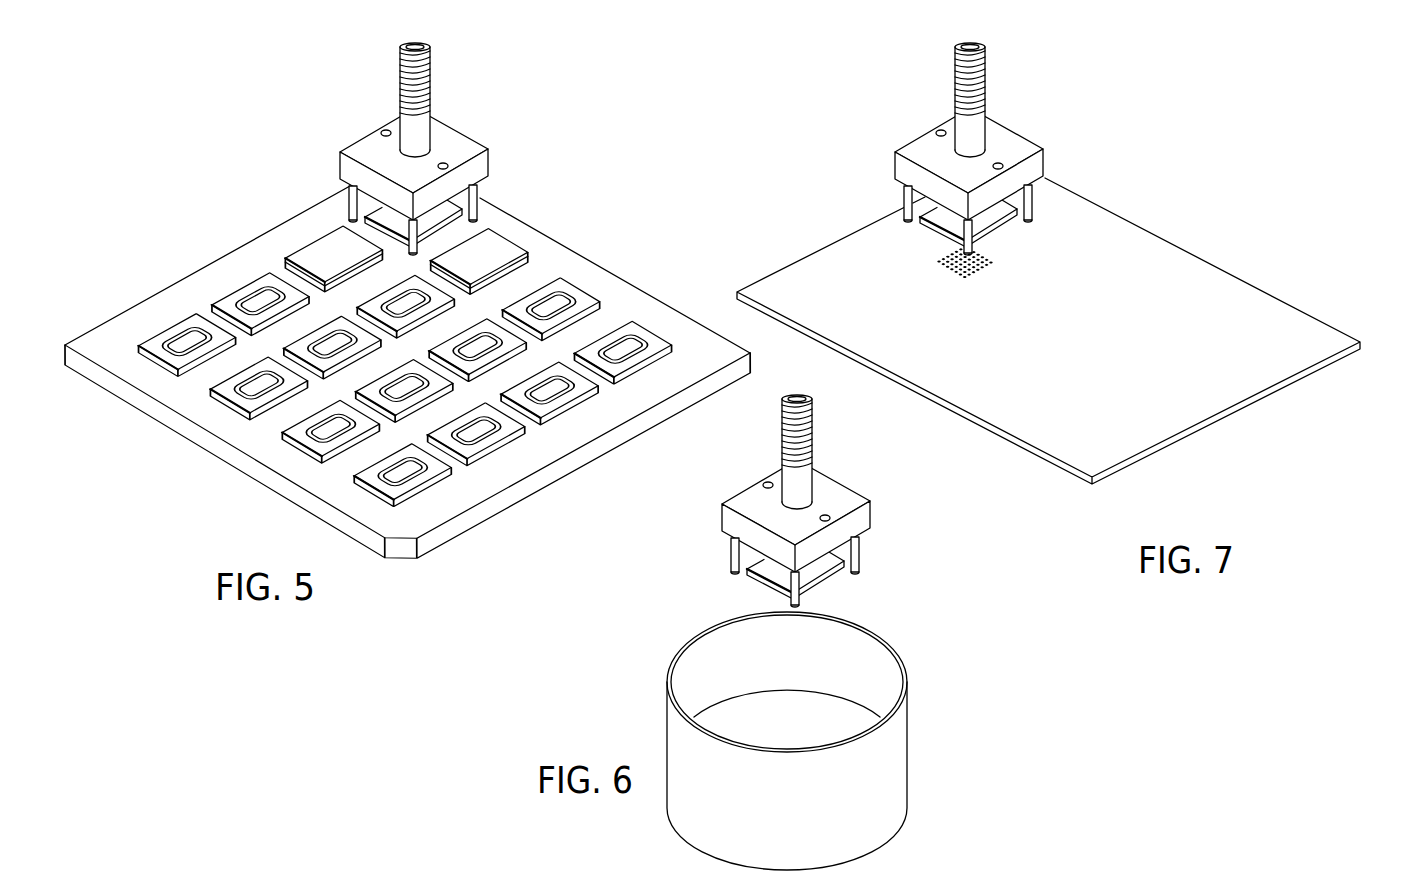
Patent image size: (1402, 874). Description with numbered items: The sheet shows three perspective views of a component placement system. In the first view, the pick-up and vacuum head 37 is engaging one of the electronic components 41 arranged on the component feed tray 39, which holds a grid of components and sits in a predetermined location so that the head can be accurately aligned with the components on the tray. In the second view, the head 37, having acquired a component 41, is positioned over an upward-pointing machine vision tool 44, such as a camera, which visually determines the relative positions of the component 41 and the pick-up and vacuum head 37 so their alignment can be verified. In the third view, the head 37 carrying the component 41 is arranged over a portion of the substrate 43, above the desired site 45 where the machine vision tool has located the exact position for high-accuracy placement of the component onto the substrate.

In FIG. 5, the pick-up and vacuum head 37 is at (347, 105).
In FIG. 7, the pick-up and vacuum head 37 is at (892, 108).
In FIG. 6, the pick-up and vacuum head 37 is at (880, 548).
In FIG. 5, the component feed tray 39 is at (250, 465).
In FIG. 5, the electronic component 41 is at (495, 247).
In FIG. 6, the electronic component 41 is at (742, 581).
In FIG. 7, the substrate 43 is at (1173, 440).
In FIG. 6, the machine vision tool 44 is at (893, 764).
In FIG. 7, the site 45 is at (994, 280).